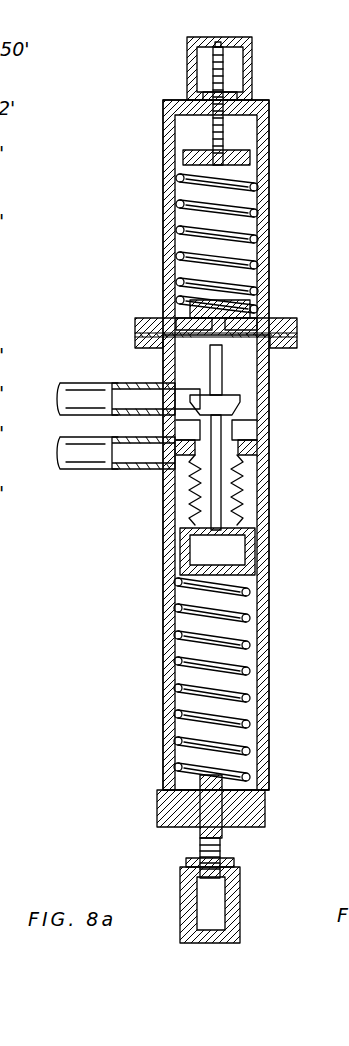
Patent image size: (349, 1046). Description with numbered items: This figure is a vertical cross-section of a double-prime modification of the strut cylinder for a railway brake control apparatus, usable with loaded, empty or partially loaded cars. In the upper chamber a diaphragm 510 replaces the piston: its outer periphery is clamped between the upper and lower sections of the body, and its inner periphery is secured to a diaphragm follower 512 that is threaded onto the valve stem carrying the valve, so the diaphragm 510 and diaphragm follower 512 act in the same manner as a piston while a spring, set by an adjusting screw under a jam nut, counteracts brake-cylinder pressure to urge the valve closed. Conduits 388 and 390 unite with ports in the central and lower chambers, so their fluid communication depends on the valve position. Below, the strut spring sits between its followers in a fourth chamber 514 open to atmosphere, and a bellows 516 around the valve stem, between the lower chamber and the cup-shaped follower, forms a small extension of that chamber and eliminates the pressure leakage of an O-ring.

The diaphragm 510 is at (252, 330).
The diaphragm follower 512 is at (240, 306).
The fourth chamber 514 is at (240, 660).
The bellows 516 is at (244, 510).
The conduit 388 is at (80, 388).
The conduit 390 is at (84, 455).